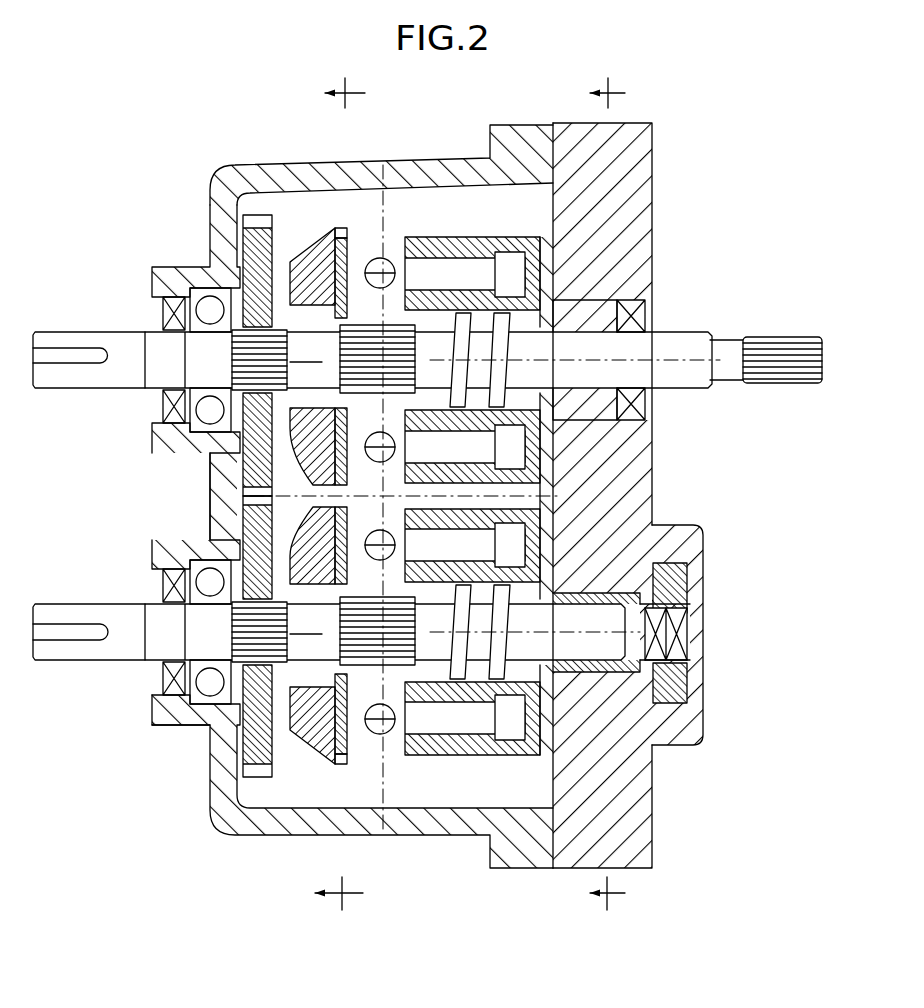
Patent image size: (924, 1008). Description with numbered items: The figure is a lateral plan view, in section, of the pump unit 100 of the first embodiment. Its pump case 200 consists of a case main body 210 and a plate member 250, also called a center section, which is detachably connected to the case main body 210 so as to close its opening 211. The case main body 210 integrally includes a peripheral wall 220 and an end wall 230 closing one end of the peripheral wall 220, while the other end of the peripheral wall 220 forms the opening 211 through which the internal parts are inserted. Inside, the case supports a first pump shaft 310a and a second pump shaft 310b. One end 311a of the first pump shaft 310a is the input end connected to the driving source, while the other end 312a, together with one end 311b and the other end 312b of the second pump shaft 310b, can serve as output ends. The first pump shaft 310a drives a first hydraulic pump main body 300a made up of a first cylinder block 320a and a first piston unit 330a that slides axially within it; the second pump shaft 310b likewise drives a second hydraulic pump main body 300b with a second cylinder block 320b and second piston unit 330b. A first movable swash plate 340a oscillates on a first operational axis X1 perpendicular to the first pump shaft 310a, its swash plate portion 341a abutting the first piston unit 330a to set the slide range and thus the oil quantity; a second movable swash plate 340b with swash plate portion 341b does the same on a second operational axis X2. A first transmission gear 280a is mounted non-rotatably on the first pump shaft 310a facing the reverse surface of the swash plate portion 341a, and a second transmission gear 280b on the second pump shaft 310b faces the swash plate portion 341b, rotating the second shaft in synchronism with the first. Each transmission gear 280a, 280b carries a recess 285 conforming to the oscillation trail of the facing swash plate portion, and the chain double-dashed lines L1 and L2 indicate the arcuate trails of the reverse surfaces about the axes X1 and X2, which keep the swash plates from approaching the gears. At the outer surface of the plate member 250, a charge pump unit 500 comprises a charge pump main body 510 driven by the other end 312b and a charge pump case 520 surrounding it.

The pump unit 100 is at (459, 484).
The pump case 200 is at (433, 463).
The case main body 210 is at (433, 153).
The opening 211 is at (560, 190).
The peripheral wall 220 is at (350, 185).
The end wall 230 is at (220, 232).
The plate member 250 is at (683, 163).
The first transmission gear 280a is at (268, 267).
The second transmission gear 280b is at (268, 520).
The recess 285 is at (272, 267).
The first hydraulic pump main body 300a is at (373, 243).
The second hydraulic pump main body 300b is at (472, 762).
The first pump shaft 310a is at (459, 348).
The second pump shaft 310b is at (329, 605).
The one end of the first pump shaft 311a is at (55, 343).
The one end of the second pump shaft 311b is at (55, 612).
The other end of the first pump shaft 312a is at (790, 360).
The other end of the second pump shaft 312b is at (655, 632).
The first cylinder block 320a is at (467, 237).
The second bearing sleeve 320b is at (427, 755).
The first piston unit 330a is at (640, 300).
The second piston unit 330b is at (565, 705).
The first movable swash plate 340a is at (216, 306).
The swash plate portion 341a is at (297, 222).
The second movable swash plate 340b is at (347, 690).
The swash plate portion 341b is at (313, 762).
The charge pump unit 500 is at (697, 605).
The charge pump main body 510 is at (697, 556).
The charge pump case 520 is at (670, 718).
The chain double-dashed line L1 is at (207, 480).
The chain double-dashed line L2 is at (170, 732).
The first operational axis X1 is at (580, 368).
The second operational axis X2 is at (560, 636).